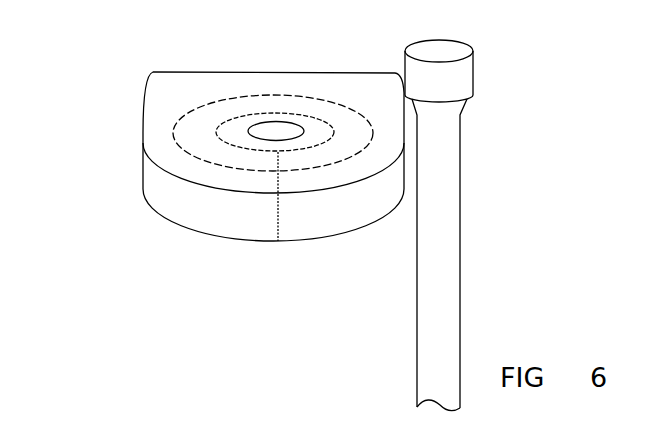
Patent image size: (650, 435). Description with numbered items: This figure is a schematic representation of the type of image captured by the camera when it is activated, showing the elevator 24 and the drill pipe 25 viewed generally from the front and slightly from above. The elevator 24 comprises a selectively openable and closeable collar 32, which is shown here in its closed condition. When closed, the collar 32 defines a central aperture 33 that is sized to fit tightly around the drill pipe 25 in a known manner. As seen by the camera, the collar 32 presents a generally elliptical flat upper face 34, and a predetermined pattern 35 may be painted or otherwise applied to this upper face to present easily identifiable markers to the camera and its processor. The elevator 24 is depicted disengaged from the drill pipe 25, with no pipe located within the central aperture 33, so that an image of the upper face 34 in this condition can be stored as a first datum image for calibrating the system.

The elevator 24 is at (120, 80).
The drill pipe 25 is at (450, 185).
The collar 32 is at (197, 207).
The central aperture 33 is at (276, 130).
The flat upper face 34 is at (147, 145).
The predetermined pattern 35 is at (247, 170).